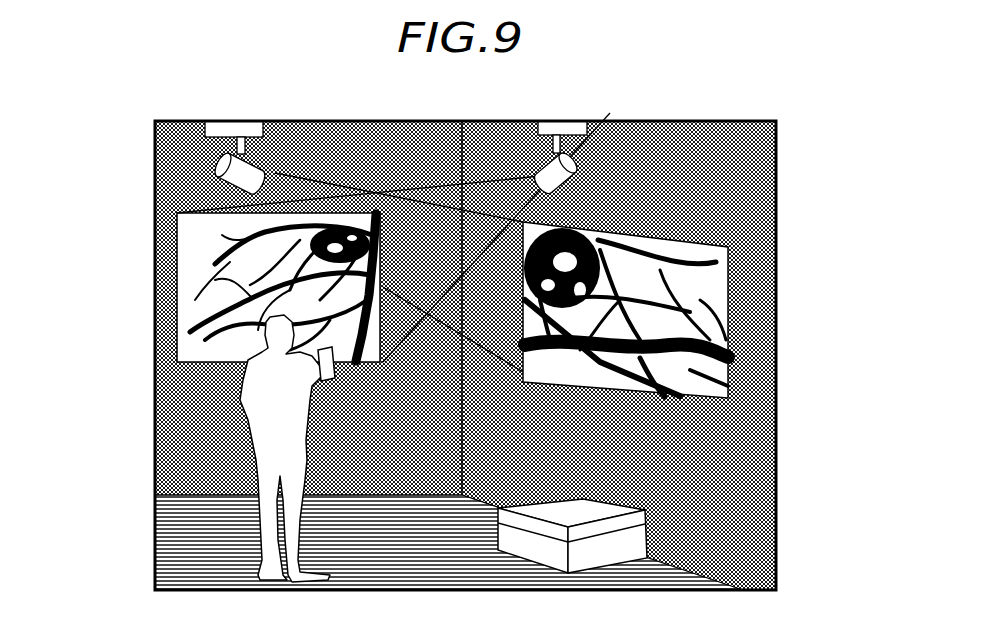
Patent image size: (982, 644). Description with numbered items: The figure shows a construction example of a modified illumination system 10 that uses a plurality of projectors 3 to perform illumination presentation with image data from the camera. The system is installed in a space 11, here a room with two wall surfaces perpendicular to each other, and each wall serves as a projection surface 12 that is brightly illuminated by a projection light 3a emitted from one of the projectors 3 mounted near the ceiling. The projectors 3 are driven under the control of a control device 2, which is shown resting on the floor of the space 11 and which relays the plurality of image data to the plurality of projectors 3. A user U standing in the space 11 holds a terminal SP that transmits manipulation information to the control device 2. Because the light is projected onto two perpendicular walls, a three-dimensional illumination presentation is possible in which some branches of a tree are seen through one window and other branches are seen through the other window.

The illumination system 10 is at (100, 163).
The space 11 is at (465, 355).
The projection surface 12 is at (190, 293).
The projector 3 is at (227, 162).
The projection light 3a is at (415, 185).
The control device 2 is at (625, 547).
The user U is at (253, 403).
The terminal SP is at (333, 380).